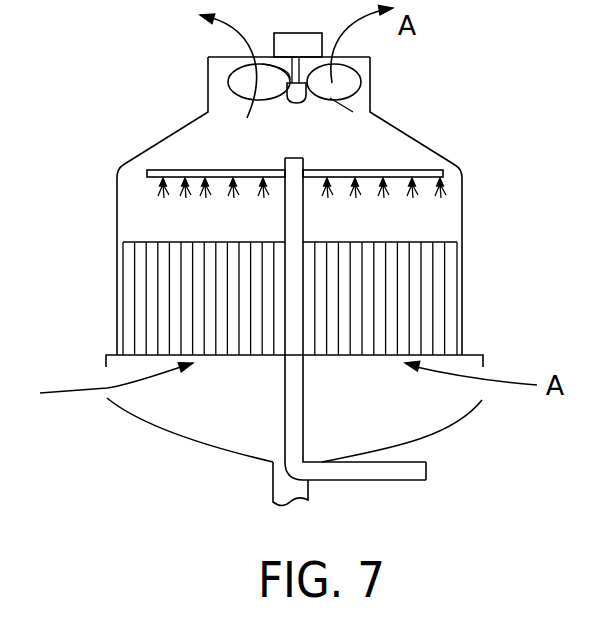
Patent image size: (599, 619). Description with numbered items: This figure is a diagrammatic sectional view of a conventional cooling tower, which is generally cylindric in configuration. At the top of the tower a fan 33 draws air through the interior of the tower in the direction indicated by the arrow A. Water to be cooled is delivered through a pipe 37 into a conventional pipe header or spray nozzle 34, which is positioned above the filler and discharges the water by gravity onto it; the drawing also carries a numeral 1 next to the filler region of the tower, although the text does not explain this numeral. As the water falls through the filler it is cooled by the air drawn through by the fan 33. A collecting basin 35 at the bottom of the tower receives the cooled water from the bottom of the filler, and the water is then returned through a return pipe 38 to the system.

The fill pack / heat exchange media 1 is at (425, 297).
The fan 33 is at (352, 88).
The pipe header or spray nozzle 34 is at (423, 178).
The collecting basin 35 is at (455, 415).
The pipe 37 is at (412, 475).
The return pipe 38 is at (287, 497).